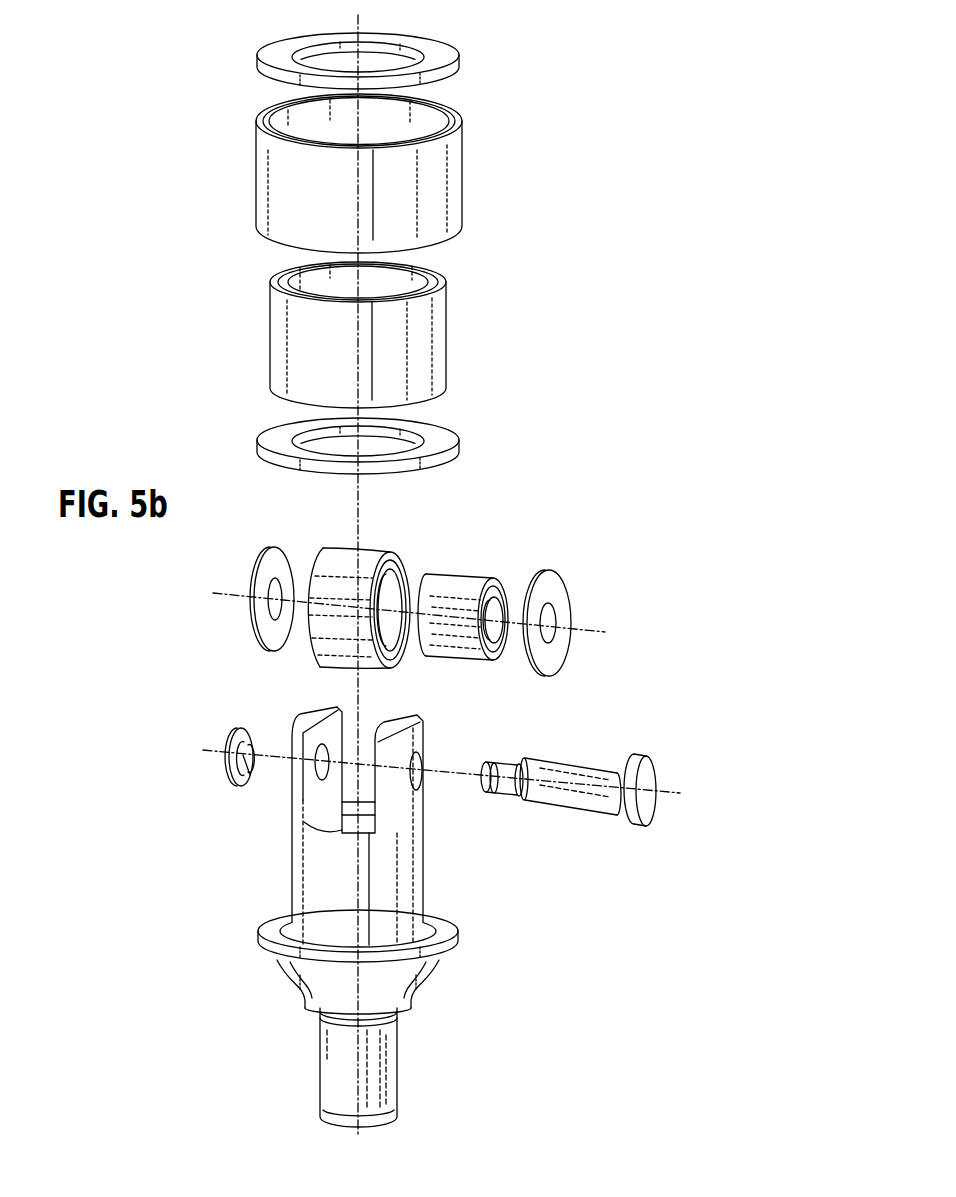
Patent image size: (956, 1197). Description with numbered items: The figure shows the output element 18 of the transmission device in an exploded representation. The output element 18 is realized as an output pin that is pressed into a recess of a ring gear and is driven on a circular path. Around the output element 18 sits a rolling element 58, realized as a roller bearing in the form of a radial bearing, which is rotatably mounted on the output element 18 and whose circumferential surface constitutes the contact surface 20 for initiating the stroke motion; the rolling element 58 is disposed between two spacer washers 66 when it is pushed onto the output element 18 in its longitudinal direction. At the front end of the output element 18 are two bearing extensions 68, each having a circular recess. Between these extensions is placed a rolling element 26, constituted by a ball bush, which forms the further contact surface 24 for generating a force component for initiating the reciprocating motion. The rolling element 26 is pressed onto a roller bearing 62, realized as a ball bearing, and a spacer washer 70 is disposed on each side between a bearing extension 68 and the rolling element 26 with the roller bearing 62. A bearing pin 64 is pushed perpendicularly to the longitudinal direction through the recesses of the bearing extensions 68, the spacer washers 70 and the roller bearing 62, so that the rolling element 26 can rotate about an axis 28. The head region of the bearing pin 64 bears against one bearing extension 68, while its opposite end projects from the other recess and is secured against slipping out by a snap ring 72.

The output element 18 is at (400, 985).
The contact surface 20 is at (396, 251).
The further contact surface 24 is at (343, 546).
The rolling element 26 is at (367, 568).
The axis 28 is at (445, 770).
The rolling element 58 is at (435, 168).
The roller bearing 62 is at (455, 590).
The bearing pin 64 is at (578, 780).
The spacer washers 66 is at (437, 55).
The bearing extensions 68 is at (334, 790).
The spacer washer 70 is at (252, 615).
The snap ring 72 is at (227, 768).